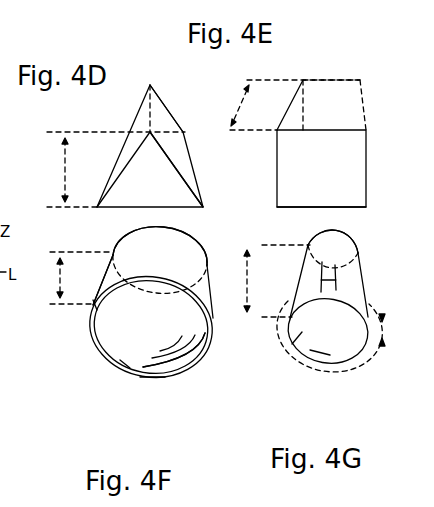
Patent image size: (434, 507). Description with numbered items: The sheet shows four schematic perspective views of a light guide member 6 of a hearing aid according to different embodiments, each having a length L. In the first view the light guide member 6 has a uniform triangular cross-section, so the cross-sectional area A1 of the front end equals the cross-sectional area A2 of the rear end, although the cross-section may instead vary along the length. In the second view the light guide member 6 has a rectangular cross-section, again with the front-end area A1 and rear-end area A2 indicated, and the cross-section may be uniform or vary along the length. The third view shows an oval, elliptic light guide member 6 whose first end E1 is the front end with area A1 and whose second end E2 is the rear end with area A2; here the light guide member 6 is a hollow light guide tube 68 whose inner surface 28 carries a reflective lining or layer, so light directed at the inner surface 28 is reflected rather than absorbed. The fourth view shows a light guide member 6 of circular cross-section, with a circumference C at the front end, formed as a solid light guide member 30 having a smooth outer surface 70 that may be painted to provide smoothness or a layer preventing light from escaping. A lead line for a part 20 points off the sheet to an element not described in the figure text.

In FIG. 4D, the light guide member 6 is at (118, 202).
In FIG. 4E, the light guide member 6 is at (290, 152).
In FIG. 4F, the light guide member 6 is at (91, 358).
In FIG. 4G, the light guide member 6 is at (283, 347).
In FIG. 4D, the instrument body 20 is at (154, 0).
In FIG. 4F, the inner surface 28 is at (180, 360).
In FIG. 4G, the solid light guide member 30 is at (283, 365).
In FIG. 4F, the hollow light guide tube 68 is at (151, 389).
In FIG. 4G, the smooth outer surface 70 is at (307, 281).
In FIG. 4D, the cross-sectional area of the front end A1 is at (173, 183).
In FIG. 4E, the cross-sectional area of the front end A1 is at (288, 182).
In FIG. 4F, the cross-sectional area of the front end A1 is at (127, 363).
In FIG. 4D, the cross-sectional area of the rear end A2 is at (137, 117).
In FIG. 4E, the cross-sectional area of the rear end A2 is at (320, 85).
In FIG. 4F, the cross-sectional area of the rear end A2 is at (175, 262).
In FIG. 4F, the first end E1 is at (88, 309).
In FIG. 4F, the second end E2 is at (108, 247).